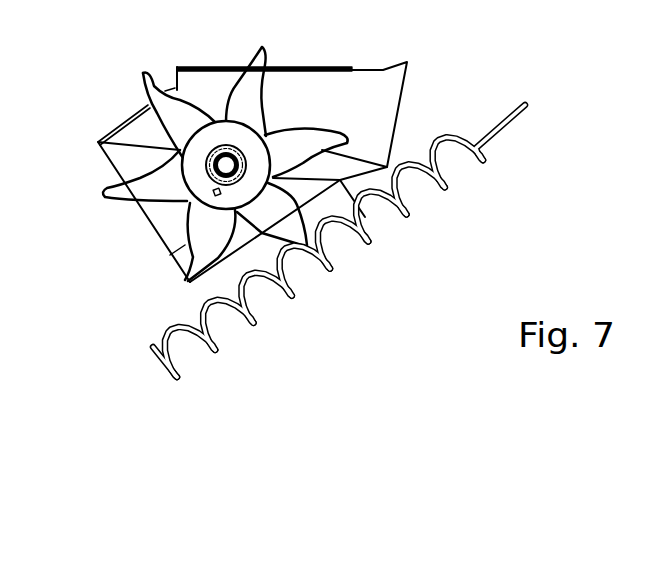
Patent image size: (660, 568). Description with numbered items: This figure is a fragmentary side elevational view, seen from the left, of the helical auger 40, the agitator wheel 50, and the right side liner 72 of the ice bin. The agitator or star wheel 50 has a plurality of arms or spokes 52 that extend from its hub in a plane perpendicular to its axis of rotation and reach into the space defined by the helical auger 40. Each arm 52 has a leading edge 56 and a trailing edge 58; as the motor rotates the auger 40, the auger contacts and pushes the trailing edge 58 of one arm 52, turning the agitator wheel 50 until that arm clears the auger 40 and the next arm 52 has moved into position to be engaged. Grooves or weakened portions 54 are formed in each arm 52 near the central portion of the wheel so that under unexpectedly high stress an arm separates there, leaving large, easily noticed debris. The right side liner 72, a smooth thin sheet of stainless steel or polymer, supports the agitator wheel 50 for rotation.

The helical auger 40 is at (413, 215).
The agitator wheel 50 is at (148, 108).
The arms 52 is at (313, 130).
The grooves or weakened portions 54 is at (230, 122).
The leading edge 56 is at (162, 223).
The trailing edge 58 is at (122, 180).
The right side liner 72 is at (367, 103).